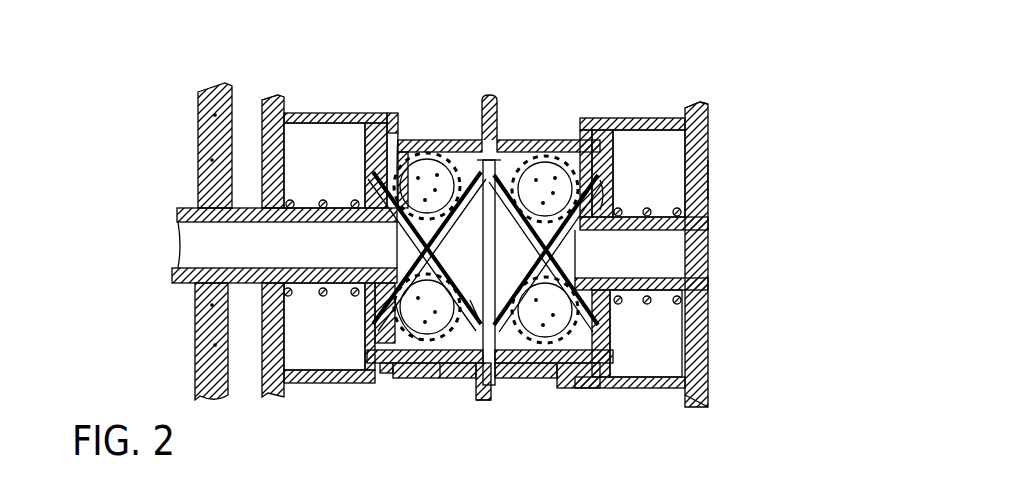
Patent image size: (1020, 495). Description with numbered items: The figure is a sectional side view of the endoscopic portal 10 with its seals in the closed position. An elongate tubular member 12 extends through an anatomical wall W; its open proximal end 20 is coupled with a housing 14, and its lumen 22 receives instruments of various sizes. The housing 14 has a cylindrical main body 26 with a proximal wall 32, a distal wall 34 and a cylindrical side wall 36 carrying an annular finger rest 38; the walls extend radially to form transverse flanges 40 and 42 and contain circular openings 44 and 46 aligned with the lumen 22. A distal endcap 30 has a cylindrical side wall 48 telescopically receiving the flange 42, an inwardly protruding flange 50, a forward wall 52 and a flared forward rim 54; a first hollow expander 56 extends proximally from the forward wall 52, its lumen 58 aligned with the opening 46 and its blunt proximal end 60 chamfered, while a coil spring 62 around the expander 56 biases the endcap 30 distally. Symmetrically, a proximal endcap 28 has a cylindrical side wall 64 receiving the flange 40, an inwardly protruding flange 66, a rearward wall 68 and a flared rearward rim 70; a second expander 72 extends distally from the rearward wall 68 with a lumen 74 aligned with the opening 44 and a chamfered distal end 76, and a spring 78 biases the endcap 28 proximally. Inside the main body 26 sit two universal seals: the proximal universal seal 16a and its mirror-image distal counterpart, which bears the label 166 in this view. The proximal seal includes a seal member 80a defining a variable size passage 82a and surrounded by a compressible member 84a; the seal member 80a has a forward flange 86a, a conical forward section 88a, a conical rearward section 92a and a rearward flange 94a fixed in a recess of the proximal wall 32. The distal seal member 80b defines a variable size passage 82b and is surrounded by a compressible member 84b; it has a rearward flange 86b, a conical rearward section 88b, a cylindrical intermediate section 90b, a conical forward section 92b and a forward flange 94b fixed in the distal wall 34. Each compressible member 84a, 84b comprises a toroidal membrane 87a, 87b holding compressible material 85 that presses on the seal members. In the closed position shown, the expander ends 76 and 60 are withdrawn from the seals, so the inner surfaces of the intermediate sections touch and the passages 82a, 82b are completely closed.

The anatomical wall W is at (198, 128).
The endoscopic portal 10 is at (772, 145).
The tubular member 12 is at (180, 211).
The housing 14 is at (538, 111).
The proximal universal seal 16a is at (545, 364).
The proximal end 20 is at (215, 170).
The lumen 22 is at (180, 263).
The main body 26 is at (585, 140).
The proximal endcap 28 is at (717, 254).
The distal endcap 30 is at (280, 96).
The proximal wall 32 is at (683, 118).
The distal wall 34 is at (370, 130).
The cylindrical side wall 36 is at (413, 140).
The finger rest 38 is at (480, 401).
The transverse flange 40 is at (620, 388).
The transverse flange 42 is at (360, 383).
The opening 44 is at (700, 226).
The opening 46 is at (345, 203).
The cylindrical side wall 48 is at (298, 113).
The transverse flange 50 is at (378, 370).
The forward wall 52 is at (263, 100).
The forward rim 54 is at (265, 395).
The first expander 56 is at (303, 203).
The lumen 58 is at (292, 268).
The proximal end 60 is at (397, 258).
The bias member 62 is at (287, 292).
The cylindrical side wall 64 is at (705, 106).
The transverse flange 66 is at (585, 386).
The rearward wall 68 is at (708, 180).
The rearward rim 70 is at (708, 400).
The second expander 72 is at (663, 213).
The lumen 74 is at (665, 278).
The distal end 76 is at (575, 263).
The bias member 78 is at (680, 306).
The seal member 80a is at (483, 262).
The seal member 80b is at (447, 160).
The variable size passage 82a is at (578, 235).
The variable size passage 82b is at (398, 226).
The compressible member 84a is at (560, 366).
The compressible member 84b is at (462, 365).
The compressible material 85 is at (362, 330).
The forward flange 86a is at (562, 146).
The rearward flange 86b is at (500, 152).
The membrane 87a is at (600, 172).
The membrane 87b is at (410, 320).
The forward section 88a is at (510, 378).
The rearward section 88b is at (490, 108).
The intermediate section 90b is at (418, 378).
The rearward section 92a is at (578, 195).
The forward section 92b is at (404, 373).
The rearward flange 94a is at (593, 215).
The forward flange 94b is at (387, 192).
The lower plate edge 166 is at (440, 378).